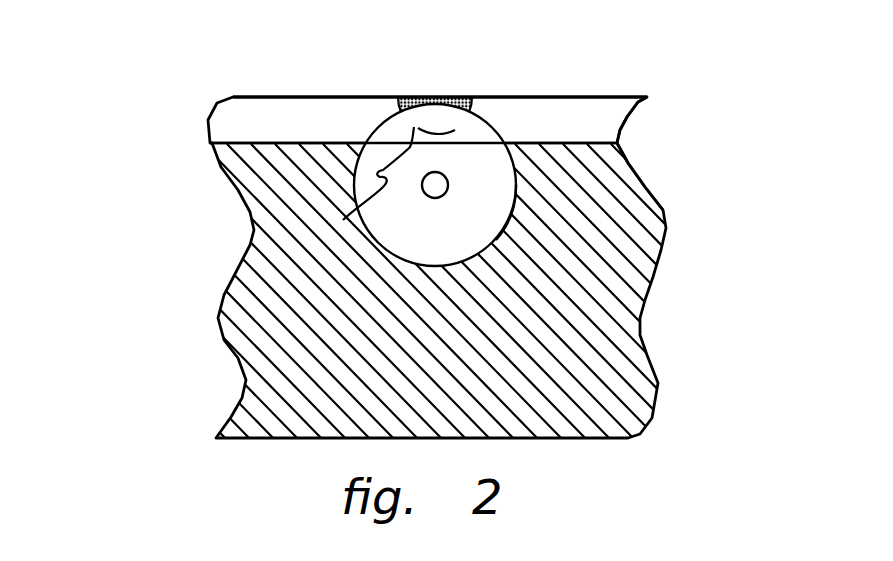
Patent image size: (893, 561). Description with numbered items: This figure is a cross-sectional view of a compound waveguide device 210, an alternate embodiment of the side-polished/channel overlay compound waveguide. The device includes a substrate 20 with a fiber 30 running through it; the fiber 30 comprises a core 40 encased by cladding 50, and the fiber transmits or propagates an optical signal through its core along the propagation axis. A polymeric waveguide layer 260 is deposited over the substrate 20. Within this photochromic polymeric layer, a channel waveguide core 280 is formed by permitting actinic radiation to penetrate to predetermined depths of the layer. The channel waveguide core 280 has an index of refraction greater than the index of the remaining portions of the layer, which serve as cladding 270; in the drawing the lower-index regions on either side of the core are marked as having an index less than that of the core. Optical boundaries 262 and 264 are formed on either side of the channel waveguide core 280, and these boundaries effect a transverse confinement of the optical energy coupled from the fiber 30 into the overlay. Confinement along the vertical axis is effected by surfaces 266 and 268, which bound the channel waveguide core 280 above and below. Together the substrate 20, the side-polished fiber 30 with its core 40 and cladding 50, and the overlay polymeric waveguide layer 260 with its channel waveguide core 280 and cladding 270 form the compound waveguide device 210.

The compound waveguide device 210 is at (176, 176).
The substrate 20 is at (452, 354).
The fiber 30 is at (510, 210).
The core 40 is at (422, 189).
The cladding 50 is at (448, 241).
The polymeric waveguide layer 260 is at (642, 127).
The optical boundary 262 is at (398, 113).
The optical boundary 264 is at (478, 115).
The surface 266 is at (459, 97).
The surface 268 is at (438, 137).
The cladding 270 is at (600, 110).
The channel waveguide core 280 is at (345, 186).